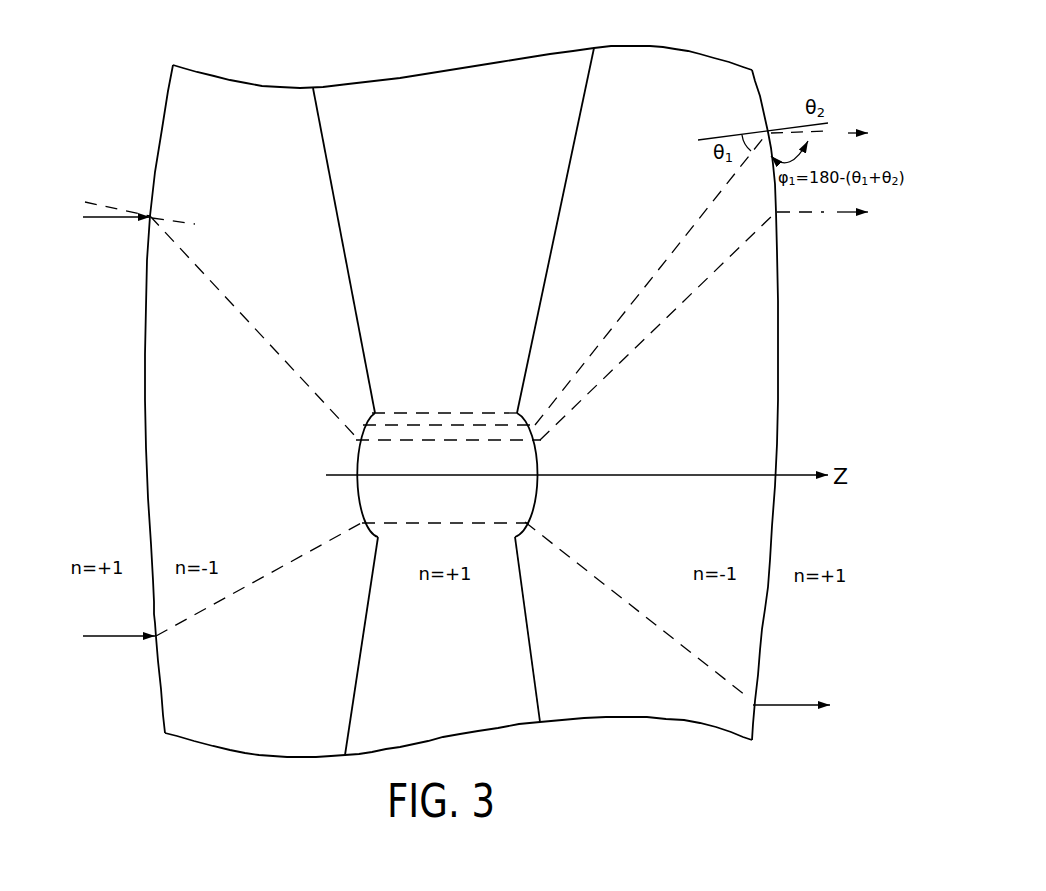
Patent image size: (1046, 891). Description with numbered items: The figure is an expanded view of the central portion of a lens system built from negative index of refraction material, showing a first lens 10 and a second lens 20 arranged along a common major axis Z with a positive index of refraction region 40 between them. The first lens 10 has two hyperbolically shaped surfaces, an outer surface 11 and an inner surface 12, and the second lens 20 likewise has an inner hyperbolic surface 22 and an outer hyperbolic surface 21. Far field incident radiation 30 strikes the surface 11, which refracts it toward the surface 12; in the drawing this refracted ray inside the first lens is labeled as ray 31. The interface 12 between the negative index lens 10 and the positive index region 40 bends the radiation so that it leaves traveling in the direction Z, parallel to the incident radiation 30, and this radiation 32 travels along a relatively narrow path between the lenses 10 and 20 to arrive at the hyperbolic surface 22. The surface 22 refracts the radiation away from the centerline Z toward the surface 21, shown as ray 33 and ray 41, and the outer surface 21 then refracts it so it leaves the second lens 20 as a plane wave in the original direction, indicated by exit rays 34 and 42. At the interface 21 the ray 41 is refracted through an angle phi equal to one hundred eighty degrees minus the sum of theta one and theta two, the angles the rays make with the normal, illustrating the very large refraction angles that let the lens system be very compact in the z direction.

The first lens 10 is at (262, 462).
The hyperbolically shaped surface 11 is at (134, 431).
The hyperbolic surface 12 is at (367, 505).
The second lens 20 is at (659, 545).
The hyperbolic surface 21 is at (790, 346).
The hyperbolic surface 22 is at (527, 505).
The far field incident radiation 30 is at (103, 223).
The refracted ray in first region 31 is at (293, 362).
The radiation 32 is at (456, 440).
The ray in second region 33 is at (705, 286).
The exit ray 34 is at (812, 215).
The positive index of refraction region 40 is at (457, 644).
The ray 41 is at (678, 242).
The exit ray at angle 42 is at (831, 132).